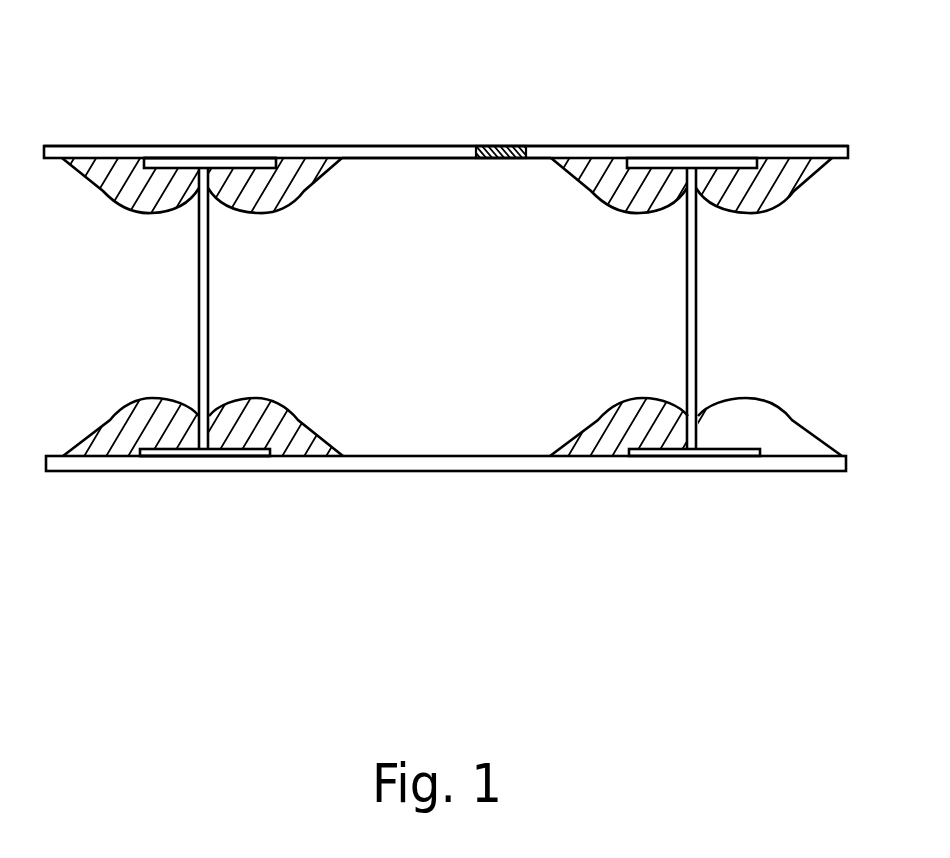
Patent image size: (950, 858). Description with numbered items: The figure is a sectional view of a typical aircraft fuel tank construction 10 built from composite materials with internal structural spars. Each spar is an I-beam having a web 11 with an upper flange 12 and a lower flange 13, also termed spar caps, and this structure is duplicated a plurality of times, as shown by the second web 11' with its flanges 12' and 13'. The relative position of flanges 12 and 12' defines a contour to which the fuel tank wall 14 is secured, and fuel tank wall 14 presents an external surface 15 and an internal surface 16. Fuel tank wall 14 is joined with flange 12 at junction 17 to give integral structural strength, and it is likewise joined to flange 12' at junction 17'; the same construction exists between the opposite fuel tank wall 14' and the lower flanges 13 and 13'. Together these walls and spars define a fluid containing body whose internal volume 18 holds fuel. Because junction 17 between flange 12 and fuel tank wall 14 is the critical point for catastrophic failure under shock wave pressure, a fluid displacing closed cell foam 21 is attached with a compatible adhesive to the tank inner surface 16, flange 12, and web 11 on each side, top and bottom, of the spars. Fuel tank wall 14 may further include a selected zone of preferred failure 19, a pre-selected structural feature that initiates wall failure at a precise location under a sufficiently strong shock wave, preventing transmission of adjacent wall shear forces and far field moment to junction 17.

The fuel tank construction 10 is at (706, 117).
The web 11 is at (158, 308).
The second web 11' is at (762, 308).
The flange 12 is at (227, 229).
The flange 12' is at (674, 94).
The flange 13 is at (212, 511).
The flange 13' is at (722, 512).
The fuel tank wall 14 is at (446, 92).
The fuel tank wall 14' is at (446, 521).
The external surface 15 is at (403, 146).
The internal surface 16 is at (432, 158).
The junction 17 is at (209, 88).
The junction 17' is at (186, 519).
The internal volume 18 is at (444, 326).
The zone of preferred failure 19 is at (502, 146).
The closed cell foam 21 is at (117, 188).